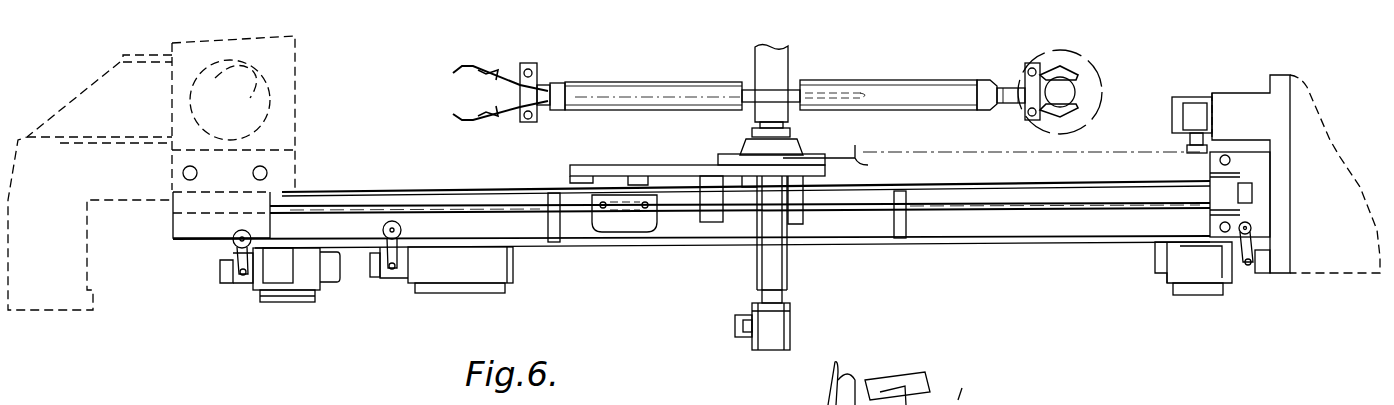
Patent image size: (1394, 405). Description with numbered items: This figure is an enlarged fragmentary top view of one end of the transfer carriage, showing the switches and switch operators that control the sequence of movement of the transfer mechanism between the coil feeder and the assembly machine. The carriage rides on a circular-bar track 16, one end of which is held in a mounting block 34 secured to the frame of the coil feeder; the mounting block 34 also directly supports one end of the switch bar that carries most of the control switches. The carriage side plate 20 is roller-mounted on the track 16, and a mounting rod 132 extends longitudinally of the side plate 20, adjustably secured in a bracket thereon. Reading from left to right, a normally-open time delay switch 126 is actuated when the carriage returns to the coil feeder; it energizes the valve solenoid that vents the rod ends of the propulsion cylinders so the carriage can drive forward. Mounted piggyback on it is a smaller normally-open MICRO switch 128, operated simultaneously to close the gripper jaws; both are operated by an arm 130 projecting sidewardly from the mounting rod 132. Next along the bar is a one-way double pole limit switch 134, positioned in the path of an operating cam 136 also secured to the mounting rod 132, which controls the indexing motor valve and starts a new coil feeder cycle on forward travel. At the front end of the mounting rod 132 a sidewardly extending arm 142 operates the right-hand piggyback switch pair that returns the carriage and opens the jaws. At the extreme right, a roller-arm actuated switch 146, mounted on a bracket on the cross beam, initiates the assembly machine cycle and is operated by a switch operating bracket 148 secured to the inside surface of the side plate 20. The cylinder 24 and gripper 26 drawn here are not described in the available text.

The track 16 is at (372, 191).
The carriage side plate 20 is at (673, 165).
The cylinder 24 is at (634, 82).
The gripper 26 is at (445, 89).
The mounting block 34 is at (198, 232).
The time delay switch 126 is at (305, 285).
The MICRO switch 128 is at (278, 277).
The arm 130 is at (558, 229).
The mounting rod 132 is at (685, 215).
The limit switch 134 is at (430, 276).
The operating cam 136 is at (629, 233).
The arm 142 is at (907, 226).
The roller-arm actuated switch 146 is at (1242, 97).
The switch operating bracket 148 is at (870, 166).